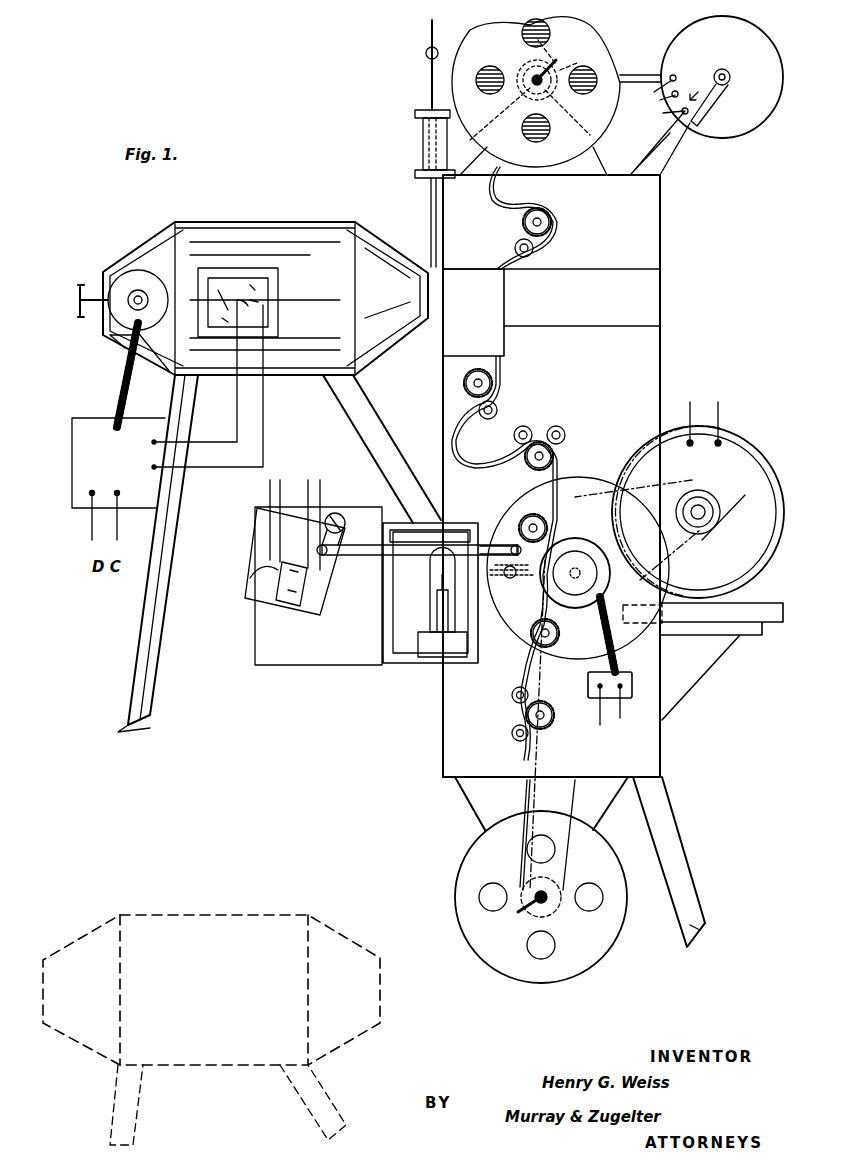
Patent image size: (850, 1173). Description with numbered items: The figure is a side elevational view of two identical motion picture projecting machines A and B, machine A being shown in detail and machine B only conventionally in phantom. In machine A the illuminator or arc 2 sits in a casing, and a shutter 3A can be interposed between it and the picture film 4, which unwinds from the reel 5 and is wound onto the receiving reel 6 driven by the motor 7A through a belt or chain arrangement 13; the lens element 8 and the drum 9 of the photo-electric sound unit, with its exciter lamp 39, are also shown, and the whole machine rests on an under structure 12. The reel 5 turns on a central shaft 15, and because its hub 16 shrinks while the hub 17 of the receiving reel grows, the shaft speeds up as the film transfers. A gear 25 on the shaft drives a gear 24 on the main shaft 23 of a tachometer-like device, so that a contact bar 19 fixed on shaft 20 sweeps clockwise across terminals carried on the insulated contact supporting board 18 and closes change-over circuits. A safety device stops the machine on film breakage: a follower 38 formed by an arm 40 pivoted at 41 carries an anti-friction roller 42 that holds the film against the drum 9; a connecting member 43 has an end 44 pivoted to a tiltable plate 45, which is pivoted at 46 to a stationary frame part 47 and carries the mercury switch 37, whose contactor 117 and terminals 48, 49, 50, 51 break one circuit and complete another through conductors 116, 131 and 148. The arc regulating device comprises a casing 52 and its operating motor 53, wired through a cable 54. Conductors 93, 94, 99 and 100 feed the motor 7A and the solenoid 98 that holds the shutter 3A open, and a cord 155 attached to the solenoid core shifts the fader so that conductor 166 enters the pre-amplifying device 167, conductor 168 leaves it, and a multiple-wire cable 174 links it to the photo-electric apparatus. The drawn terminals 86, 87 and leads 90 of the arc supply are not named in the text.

The motion picture projecting machine A is at (265, 298).
The motion picture projecting machine B is at (211, 990).
The illuminator 2 is at (252, 285).
The shutter 3A is at (417, 222).
The picture film 4 is at (512, 248).
The reel 5 is at (612, 122).
The receiving reel 6 is at (462, 866).
The motor 7A is at (764, 572).
The lens element 8 is at (506, 340).
The drum 9 is at (598, 552).
The under structure 12 is at (150, 672).
The belt or chain arrangement 13 is at (652, 588).
The central shaft 15 is at (532, 76).
The hub of reel 16 is at (500, 114).
The hub of reel 17 is at (560, 880).
The contact supporting board 18 is at (684, 34).
The contact bar 19 is at (717, 104).
The shaft 20 is at (730, 76).
The main shaft 23 is at (637, 73).
The gear 24 is at (567, 113).
The gear 25 is at (556, 50).
The switch 37 is at (292, 606).
The follower 38 is at (520, 514).
The exciter lamp 39 is at (430, 590).
The arm 40 is at (512, 545).
The pivot 41 is at (510, 580).
The anti-friction roller 42 is at (535, 514).
The connecting member 43 is at (445, 530).
The end of connecting member 44 is at (328, 558).
The tiltable plate 45 is at (326, 585).
The pivot 46 is at (338, 512).
The stationary part of machine frame 47 is at (362, 510).
The switch terminal 48 is at (310, 612).
The switch terminal 49 is at (322, 600).
The switch terminal 50 is at (262, 578).
The switch terminal 51 is at (256, 590).
The casing 52 is at (72, 442).
The operating motor 53 is at (118, 310).
The cable 54 is at (120, 395).
The terminal 86 is at (119, 525).
The terminal 87 is at (81, 518).
The electrode leads 90 is at (263, 424).
The conductor 93 is at (718, 410).
The conductor 94 is at (690, 411).
The solenoid 98 is at (415, 173).
The conductor 99 is at (420, 128).
The conductor 100 is at (422, 157).
The conductor 116 is at (308, 490).
The contactor 117 is at (320, 495).
The conductor 131 is at (280, 495).
The conductor 148 is at (270, 496).
The cord 155 is at (432, 30).
The conductor 166 is at (598, 716).
The pre-amplifying device 167 is at (634, 690).
The conductor 168 is at (637, 712).
The multiple-wire cable 174 is at (634, 678).